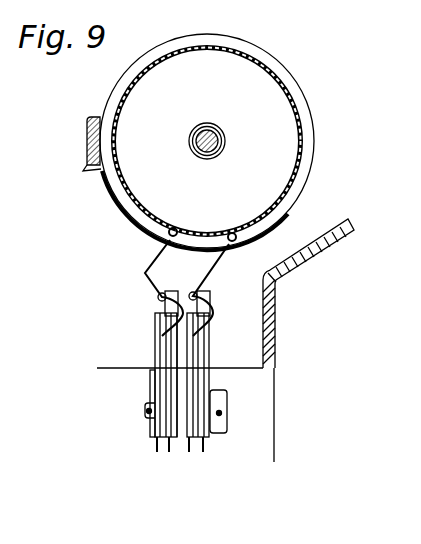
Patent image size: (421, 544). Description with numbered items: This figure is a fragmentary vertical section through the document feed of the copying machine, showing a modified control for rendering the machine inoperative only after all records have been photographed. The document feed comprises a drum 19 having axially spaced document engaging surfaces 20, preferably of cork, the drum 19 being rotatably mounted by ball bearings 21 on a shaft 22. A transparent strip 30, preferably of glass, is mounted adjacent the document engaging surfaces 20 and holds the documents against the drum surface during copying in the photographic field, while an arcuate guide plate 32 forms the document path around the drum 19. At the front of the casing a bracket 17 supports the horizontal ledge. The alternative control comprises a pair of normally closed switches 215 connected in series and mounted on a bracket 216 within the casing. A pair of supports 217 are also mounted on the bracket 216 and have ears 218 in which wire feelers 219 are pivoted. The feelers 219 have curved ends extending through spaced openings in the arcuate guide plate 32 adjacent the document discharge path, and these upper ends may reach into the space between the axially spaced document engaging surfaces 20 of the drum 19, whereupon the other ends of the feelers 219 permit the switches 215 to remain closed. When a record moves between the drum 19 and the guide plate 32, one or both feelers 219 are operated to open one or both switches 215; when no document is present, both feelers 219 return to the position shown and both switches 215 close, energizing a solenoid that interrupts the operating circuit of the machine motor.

The bracket 17 is at (321, 253).
The drum 19 is at (203, 49).
The document engaging surfaces 20 is at (224, 39).
The ball bearings 21 is at (214, 124).
The shaft 22 is at (217, 141).
The transparent strip 30 is at (88, 133).
The arcuate guide plate 32 is at (130, 221).
The normally closed switch 215 is at (158, 340).
The bracket 216 is at (268, 392).
The support 217 is at (212, 318).
The ear 218 is at (186, 292).
The wire feeler 219 is at (145, 273).